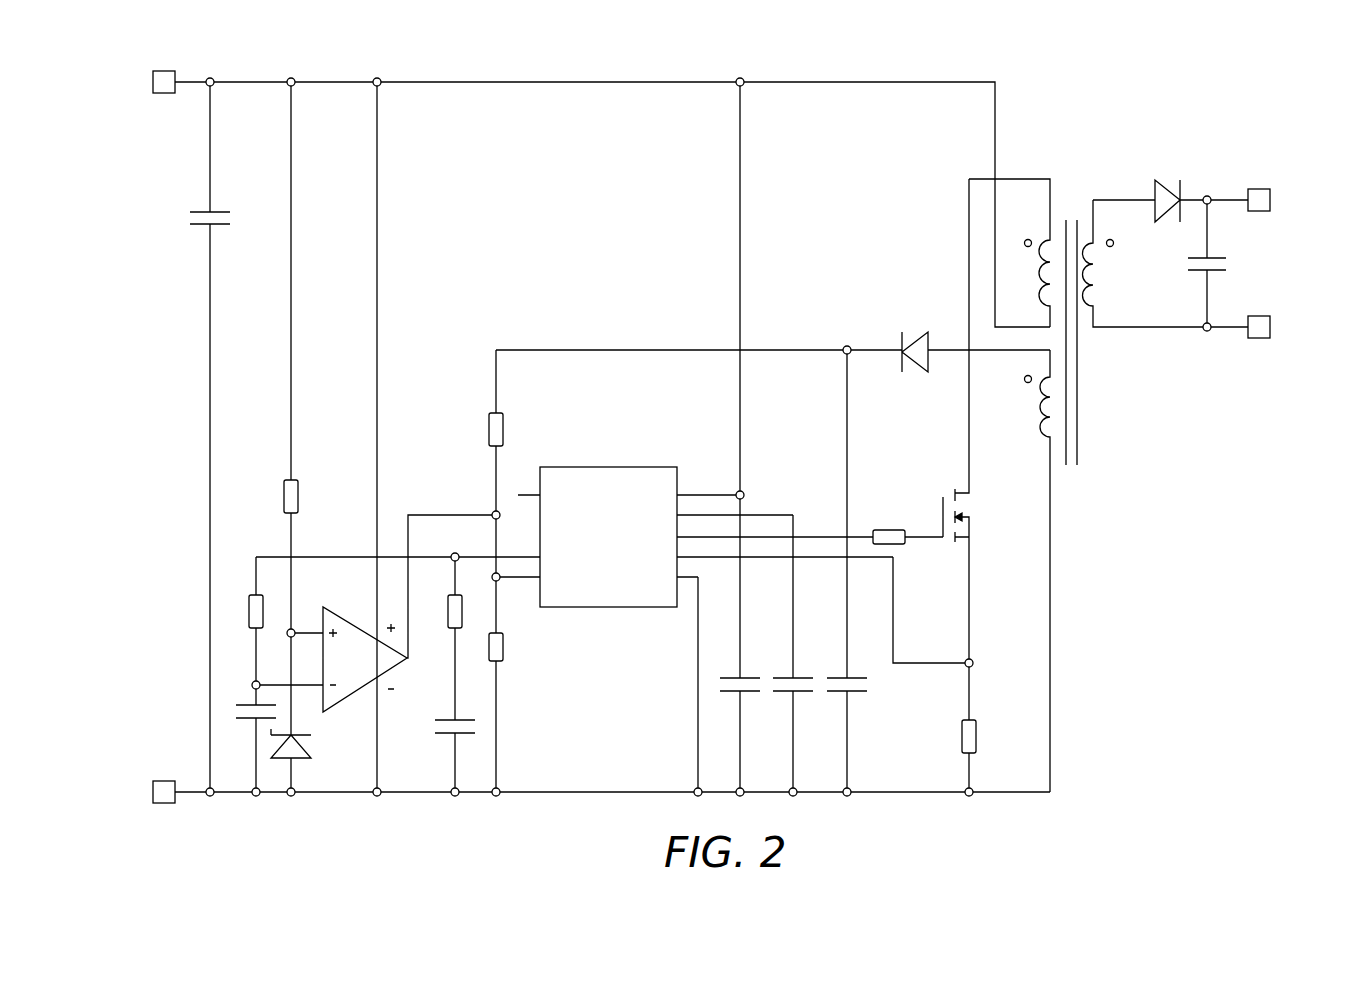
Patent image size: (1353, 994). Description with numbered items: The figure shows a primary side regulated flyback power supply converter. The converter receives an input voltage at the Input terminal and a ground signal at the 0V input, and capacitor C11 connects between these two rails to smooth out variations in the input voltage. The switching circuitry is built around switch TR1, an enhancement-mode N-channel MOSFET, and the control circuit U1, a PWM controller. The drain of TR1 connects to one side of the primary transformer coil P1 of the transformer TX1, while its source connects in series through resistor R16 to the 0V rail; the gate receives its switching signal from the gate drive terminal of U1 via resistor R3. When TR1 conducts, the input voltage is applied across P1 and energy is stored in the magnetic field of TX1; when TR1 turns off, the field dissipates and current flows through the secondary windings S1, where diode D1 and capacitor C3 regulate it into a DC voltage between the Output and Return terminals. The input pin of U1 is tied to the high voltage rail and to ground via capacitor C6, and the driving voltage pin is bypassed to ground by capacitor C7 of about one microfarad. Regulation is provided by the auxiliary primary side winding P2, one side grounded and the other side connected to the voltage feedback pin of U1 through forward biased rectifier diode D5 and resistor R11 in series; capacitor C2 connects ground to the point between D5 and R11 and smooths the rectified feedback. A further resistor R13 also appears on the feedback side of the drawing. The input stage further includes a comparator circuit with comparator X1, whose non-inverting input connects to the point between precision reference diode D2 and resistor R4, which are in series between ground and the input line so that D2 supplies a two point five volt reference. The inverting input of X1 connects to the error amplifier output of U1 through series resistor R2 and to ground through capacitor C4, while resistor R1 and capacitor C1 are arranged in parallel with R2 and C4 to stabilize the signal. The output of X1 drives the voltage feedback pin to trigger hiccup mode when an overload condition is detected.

The Input terminal Input is at (136, 82).
The 0 V input 0V is at (148, 792).
The OUTPUT terminal Output is at (1272, 200).
The RETURN terminal Return is at (1270, 327).
The capacitor C11 is at (230, 437).
The resistor R4 is at (274, 496).
The resistor R2 is at (241, 611).
The comparator X1 is at (376, 613).
The resistor R1 is at (441, 611).
The capacitor C4 is at (250, 725).
The precision reference diode D2 is at (306, 744).
The capacitor C1 is at (439, 728).
The resistor R11 is at (516, 429).
The control circuit U1 is at (574, 526).
The resistor R13 is at (516, 647).
The capacitor C6 is at (744, 673).
The capacitor C7 is at (797, 673).
The capacitor C2 is at (851, 673).
The resistor R3 is at (908, 525).
The switch TR1 is at (946, 421).
The resistor R16 is at (946, 736).
The forward biased rectifier diode D5 is at (948, 338).
The transformer TX1 is at (1109, 342).
The primary transformer coil P1 is at (1009, 253).
The auxiliary primary side transformer winding P2 is at (1028, 571).
The secondary windings S1 is at (1145, 263).
The diode D1 is at (1180, 188).
The capacitor C3 is at (1221, 263).